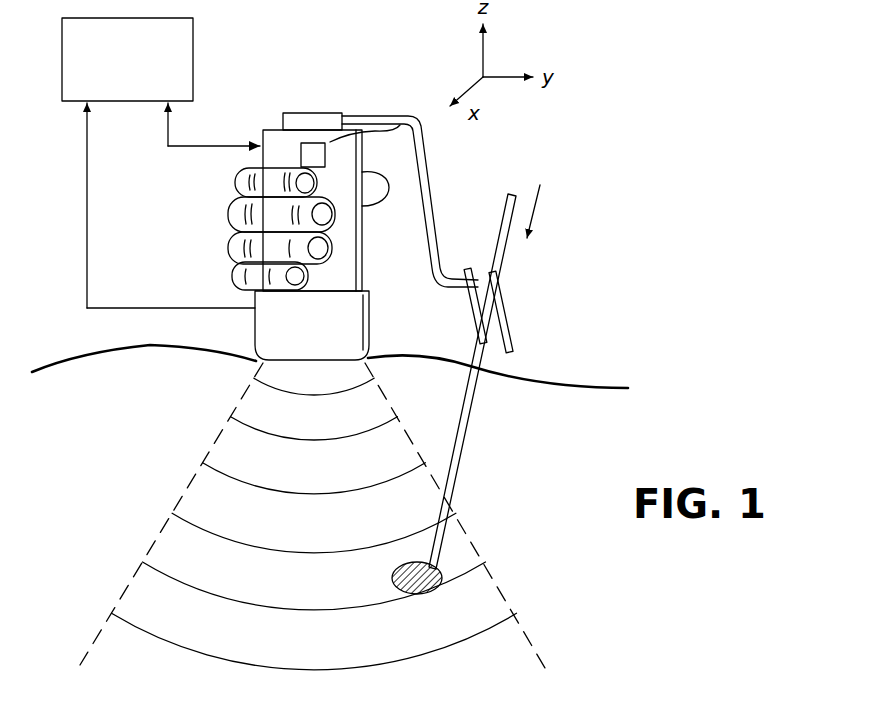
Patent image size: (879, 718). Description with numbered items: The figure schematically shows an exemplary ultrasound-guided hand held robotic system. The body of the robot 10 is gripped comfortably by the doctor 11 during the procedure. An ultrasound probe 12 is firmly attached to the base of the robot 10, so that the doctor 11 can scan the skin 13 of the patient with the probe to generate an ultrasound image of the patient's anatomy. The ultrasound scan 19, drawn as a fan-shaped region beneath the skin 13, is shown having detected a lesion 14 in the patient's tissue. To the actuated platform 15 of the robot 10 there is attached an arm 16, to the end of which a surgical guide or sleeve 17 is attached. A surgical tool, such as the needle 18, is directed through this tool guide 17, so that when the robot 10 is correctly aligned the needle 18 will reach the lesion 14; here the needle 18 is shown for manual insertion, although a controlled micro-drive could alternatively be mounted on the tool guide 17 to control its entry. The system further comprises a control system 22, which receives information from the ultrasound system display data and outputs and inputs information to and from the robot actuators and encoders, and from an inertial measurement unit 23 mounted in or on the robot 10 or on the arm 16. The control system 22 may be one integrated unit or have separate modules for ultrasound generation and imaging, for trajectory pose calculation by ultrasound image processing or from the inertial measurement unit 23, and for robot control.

The robot 10 is at (362, 243).
The doctor 11 is at (229, 213).
The ultrasound probe 12 is at (369, 322).
The skin 13 is at (66, 357).
The lesion 14 is at (438, 598).
The actuated platform 15 is at (318, 112).
The arm 16 is at (437, 183).
The surgical guide 17 is at (505, 322).
The needle 18 is at (505, 248).
The ultrasound scan 19 is at (196, 476).
The control system 22 is at (193, 40).
The inertial measurement unit 23 is at (401, 120).